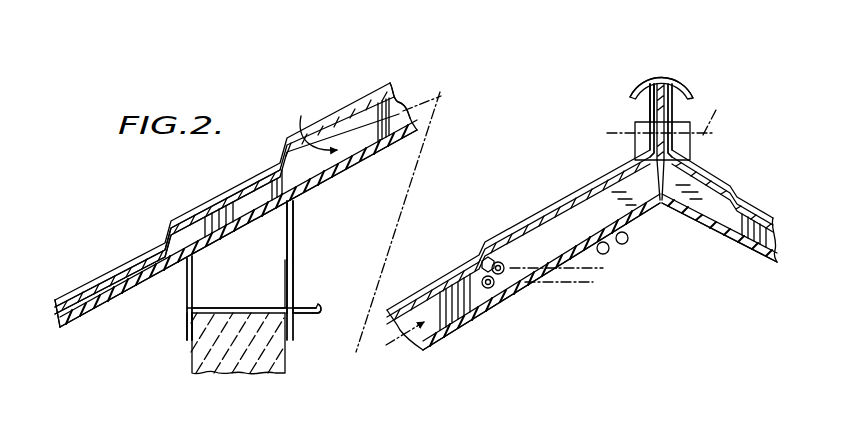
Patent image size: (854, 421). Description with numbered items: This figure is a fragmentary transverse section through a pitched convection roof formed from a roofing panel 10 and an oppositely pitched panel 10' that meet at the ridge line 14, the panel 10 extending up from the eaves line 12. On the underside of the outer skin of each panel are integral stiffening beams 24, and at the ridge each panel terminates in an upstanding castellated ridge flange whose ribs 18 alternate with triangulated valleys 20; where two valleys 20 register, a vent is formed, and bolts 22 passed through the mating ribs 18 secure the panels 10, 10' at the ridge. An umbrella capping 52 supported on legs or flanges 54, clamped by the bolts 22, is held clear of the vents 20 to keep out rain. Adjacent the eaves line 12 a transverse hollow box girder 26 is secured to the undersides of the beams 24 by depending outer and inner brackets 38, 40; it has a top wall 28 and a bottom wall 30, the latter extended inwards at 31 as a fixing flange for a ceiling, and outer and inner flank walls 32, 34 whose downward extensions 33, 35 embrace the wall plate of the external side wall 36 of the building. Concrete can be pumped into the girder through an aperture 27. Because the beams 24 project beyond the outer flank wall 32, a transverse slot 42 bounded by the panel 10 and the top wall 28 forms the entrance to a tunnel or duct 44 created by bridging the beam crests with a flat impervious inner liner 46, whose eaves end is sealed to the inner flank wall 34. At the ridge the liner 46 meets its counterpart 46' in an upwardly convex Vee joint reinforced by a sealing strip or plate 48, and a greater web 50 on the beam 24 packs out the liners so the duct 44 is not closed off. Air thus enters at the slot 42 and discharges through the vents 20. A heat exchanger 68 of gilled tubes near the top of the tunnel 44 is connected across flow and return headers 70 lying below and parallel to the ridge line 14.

The roofing panel 10 is at (289, 205).
The oppositely pitched panel 10' is at (582, 217).
The eaves line 12 is at (57, 296).
The ridge line 14 is at (654, 77).
The rib 18 is at (688, 105).
The triangulated valley 20 is at (635, 132).
The bolts 22 is at (710, 113).
The stiffening beam 24 is at (396, 116).
The box girder 26 is at (252, 273).
The aperture 27 is at (291, 250).
The top wall 28 is at (240, 222).
The bottom wall 30 is at (233, 298).
The fixing flange 31 is at (316, 307).
The outer flank wall 32 is at (238, 293).
The outer flank wall extension 33 is at (186, 333).
The inner flank wall 34 is at (294, 277).
The inner flank wall extension 35 is at (289, 337).
The external side wall 36 is at (192, 360).
The outer bracket 38 is at (183, 300).
The inner bracket 40 is at (292, 216).
The transverse slot 42 is at (183, 277).
The tunnel or duct 44 is at (363, 234).
The inner liner 46 is at (360, 240).
The counterpart liner 46' is at (719, 255).
The sealing strip or plate 48 is at (661, 205).
The web 50 is at (682, 157).
The umbrella capping 52 is at (634, 96).
The legs or flanges 54 is at (648, 108).
The heat exchanger 68 is at (503, 288).
The flow and return headers 70 is at (624, 244).